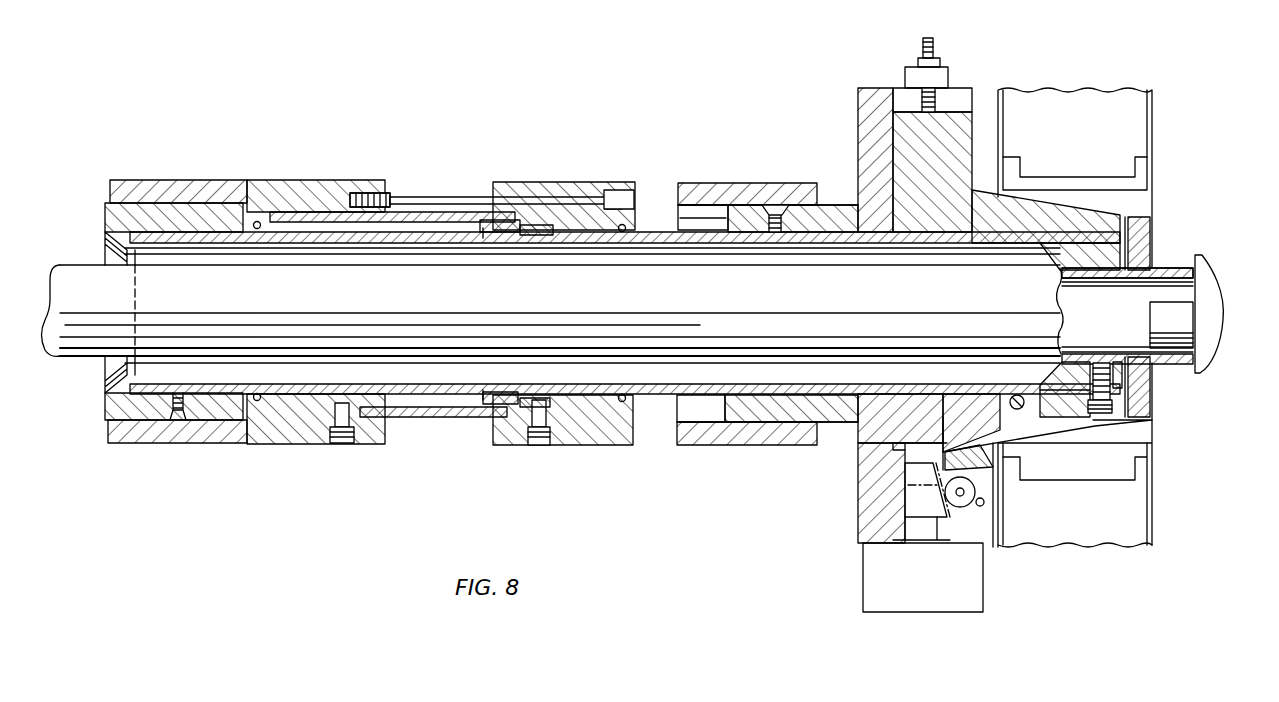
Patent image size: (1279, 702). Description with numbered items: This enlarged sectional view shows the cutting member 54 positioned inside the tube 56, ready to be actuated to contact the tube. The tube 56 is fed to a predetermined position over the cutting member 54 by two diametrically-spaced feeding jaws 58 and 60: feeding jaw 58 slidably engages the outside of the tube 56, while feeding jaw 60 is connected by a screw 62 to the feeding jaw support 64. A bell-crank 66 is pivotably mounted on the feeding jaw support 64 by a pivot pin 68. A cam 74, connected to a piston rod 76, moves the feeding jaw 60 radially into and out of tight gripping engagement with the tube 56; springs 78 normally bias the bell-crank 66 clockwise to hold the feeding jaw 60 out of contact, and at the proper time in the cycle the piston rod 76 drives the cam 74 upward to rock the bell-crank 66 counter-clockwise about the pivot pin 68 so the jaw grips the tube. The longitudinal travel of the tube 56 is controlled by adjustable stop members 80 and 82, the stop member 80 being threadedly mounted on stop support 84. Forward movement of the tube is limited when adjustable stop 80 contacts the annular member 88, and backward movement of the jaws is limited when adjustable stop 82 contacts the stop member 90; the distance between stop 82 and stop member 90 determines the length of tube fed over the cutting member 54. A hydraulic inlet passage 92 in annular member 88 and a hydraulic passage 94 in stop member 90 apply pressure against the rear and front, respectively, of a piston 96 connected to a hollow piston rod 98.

The cutting member 54 is at (1187, 325).
The tube 56 is at (1167, 268).
The feeding jaw 58 is at (1063, 264).
The feeding jaw 60 is at (1078, 372).
The screw 62 is at (1117, 410).
The feeding jaw support 64 is at (1090, 433).
The bell-crank 66 is at (975, 462).
The pivot pin 68 is at (1020, 410).
The cam 74 is at (917, 493).
The piston rod 76 is at (925, 532).
The springs 78 is at (980, 504).
The adjustable stop member 80 is at (221, 188).
The adjustable stop member 82 is at (771, 158).
The stop support 84 is at (158, 213).
The annular member 88 is at (341, 157).
The stop member 90 is at (593, 184).
The hydraulic inlet passage 92 is at (343, 446).
The hydraulic passage 94 is at (543, 447).
The piston 96 is at (485, 400).
The hollow piston rod 98 is at (418, 388).